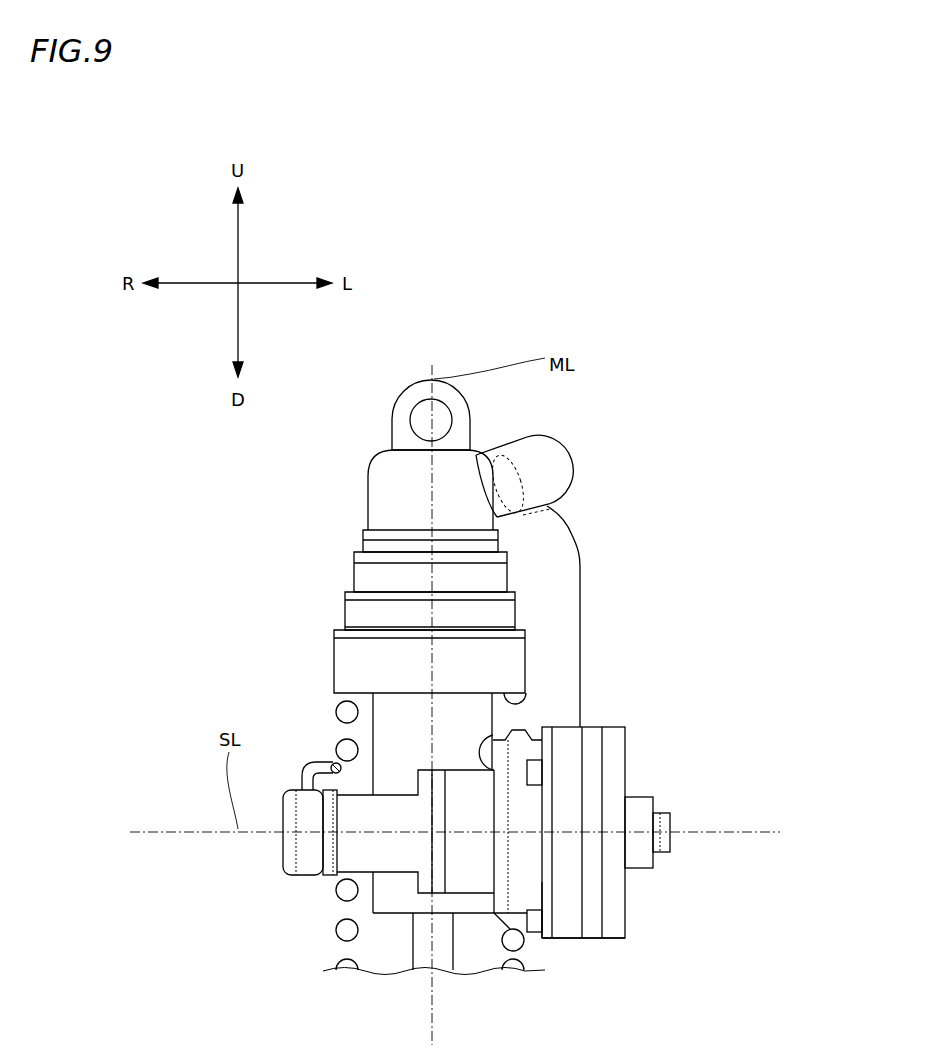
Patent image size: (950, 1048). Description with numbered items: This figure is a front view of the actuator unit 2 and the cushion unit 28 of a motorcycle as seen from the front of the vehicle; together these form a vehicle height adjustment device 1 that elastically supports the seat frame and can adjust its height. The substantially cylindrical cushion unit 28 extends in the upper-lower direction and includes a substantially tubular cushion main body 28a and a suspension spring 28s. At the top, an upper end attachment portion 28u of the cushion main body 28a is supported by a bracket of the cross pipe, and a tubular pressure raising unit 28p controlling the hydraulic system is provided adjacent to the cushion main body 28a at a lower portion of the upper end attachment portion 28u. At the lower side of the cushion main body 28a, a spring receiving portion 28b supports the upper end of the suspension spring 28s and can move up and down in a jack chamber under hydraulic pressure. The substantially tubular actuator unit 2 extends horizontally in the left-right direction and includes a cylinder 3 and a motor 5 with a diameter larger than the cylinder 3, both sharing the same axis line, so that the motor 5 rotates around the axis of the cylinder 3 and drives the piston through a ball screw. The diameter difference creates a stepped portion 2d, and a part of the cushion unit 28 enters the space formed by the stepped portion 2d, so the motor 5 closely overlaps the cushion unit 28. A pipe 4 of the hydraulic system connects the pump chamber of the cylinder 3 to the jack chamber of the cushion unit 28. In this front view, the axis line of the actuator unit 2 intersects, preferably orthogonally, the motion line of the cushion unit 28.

The vehicle height adjustment device 1 is at (635, 434).
The actuator unit 2 is at (612, 716).
The stepped portion 2d is at (497, 741).
The cylinder 3 is at (388, 802).
The pipe 4 is at (316, 757).
The motor 5 is at (570, 924).
The cushion unit 28 is at (352, 515).
The upper end attachment portion 28u is at (404, 398).
The cushion main body 28a is at (385, 470).
The spring receiving portion 28b is at (334, 668).
The pressure raising unit 28p is at (577, 569).
The suspension spring 28s is at (336, 930).